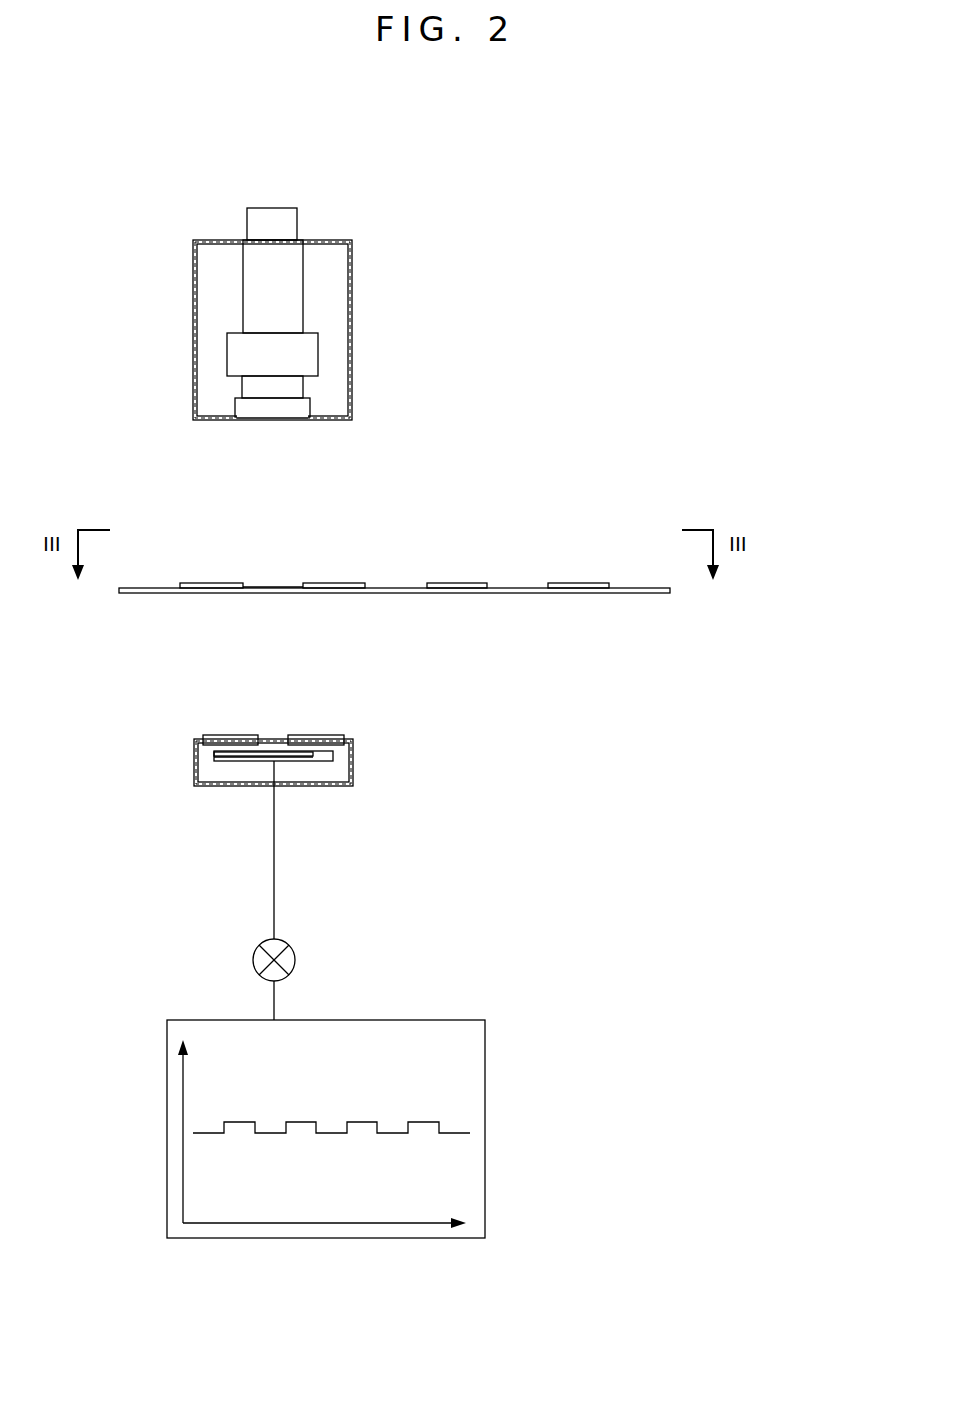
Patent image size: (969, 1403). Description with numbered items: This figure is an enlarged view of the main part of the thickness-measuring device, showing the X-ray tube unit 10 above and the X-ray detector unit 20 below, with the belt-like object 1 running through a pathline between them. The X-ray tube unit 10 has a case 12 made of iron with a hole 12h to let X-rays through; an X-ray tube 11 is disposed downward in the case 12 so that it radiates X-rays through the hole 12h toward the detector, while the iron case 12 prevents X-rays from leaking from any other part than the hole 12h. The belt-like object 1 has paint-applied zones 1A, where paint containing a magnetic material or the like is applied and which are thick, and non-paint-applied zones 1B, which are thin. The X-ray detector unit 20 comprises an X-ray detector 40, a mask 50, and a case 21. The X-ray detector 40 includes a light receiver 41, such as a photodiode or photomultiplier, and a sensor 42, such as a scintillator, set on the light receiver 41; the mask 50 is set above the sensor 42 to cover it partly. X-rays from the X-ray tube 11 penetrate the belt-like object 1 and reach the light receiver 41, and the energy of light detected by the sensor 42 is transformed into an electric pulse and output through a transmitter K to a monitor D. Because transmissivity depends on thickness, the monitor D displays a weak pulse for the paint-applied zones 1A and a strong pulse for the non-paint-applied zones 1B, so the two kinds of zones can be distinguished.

The X-ray tube unit 10 is at (146, 264).
The X-ray tube 11 is at (290, 288).
The case 12 is at (352, 362).
The hole 12h is at (300, 420).
The belt-like object 1 is at (614, 595).
The paint-applied zone 1A is at (581, 575).
The non-paint-applied zone 1B is at (289, 575).
The X-ray detector unit 20 is at (545, 692).
The case 21 is at (303, 786).
The X-ray detector 40 is at (307, 765).
The light receiver 41 is at (249, 786).
The sensor 42 is at (240, 754).
The mask 50 is at (231, 735).
The transmitter K is at (296, 955).
The monitor D is at (485, 1085).